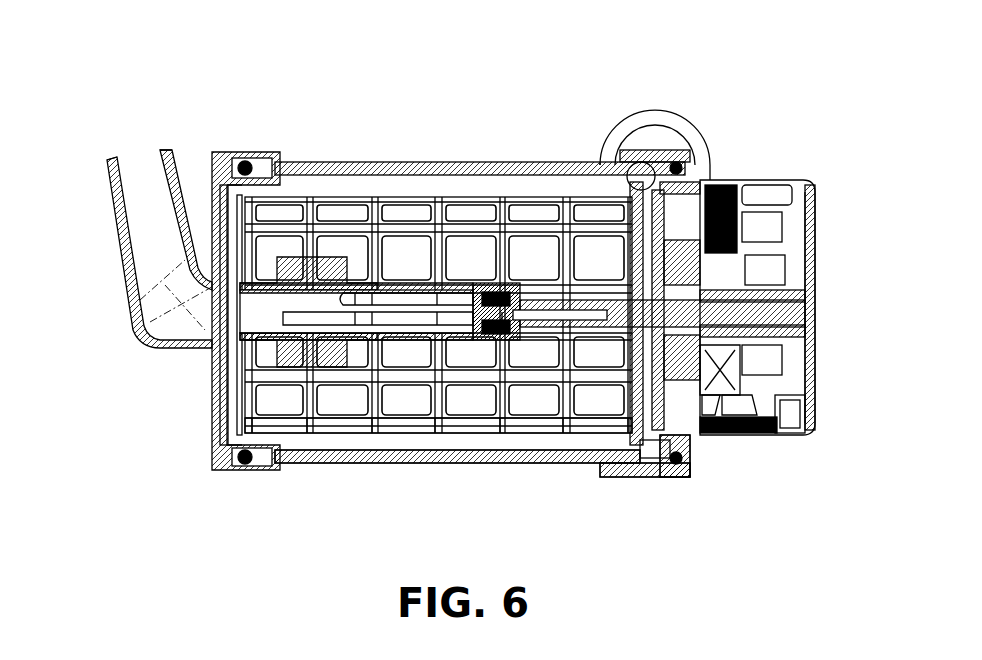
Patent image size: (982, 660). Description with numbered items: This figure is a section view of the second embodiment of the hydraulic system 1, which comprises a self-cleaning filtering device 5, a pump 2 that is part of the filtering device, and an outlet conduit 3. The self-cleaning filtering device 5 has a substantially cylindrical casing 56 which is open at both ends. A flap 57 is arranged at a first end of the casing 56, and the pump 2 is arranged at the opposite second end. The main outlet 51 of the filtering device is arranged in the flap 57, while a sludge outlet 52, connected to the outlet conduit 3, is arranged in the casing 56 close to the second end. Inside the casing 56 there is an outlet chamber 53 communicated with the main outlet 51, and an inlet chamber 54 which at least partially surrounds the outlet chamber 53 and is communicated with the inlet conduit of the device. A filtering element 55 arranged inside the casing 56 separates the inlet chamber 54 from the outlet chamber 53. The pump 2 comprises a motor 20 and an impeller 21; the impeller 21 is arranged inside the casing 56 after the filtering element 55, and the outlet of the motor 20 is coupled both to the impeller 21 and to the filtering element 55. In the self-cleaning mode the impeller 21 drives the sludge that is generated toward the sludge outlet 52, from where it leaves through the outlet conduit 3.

The hydraulic system 1 is at (194, 101).
The pump 2 is at (816, 194).
The outlet conduit 3 is at (660, 97).
The self-cleaning filtering device 5 is at (507, 159).
The motor 20 is at (783, 422).
The impeller 21 is at (638, 473).
The main outlet 51 is at (166, 280).
The sludge outlet 52 is at (641, 176).
The outlet chamber 53 is at (380, 186).
The inlet chamber 54 is at (471, 234).
The filtering element 55 is at (362, 432).
The casing 56 is at (480, 462).
The flap 57 is at (218, 472).